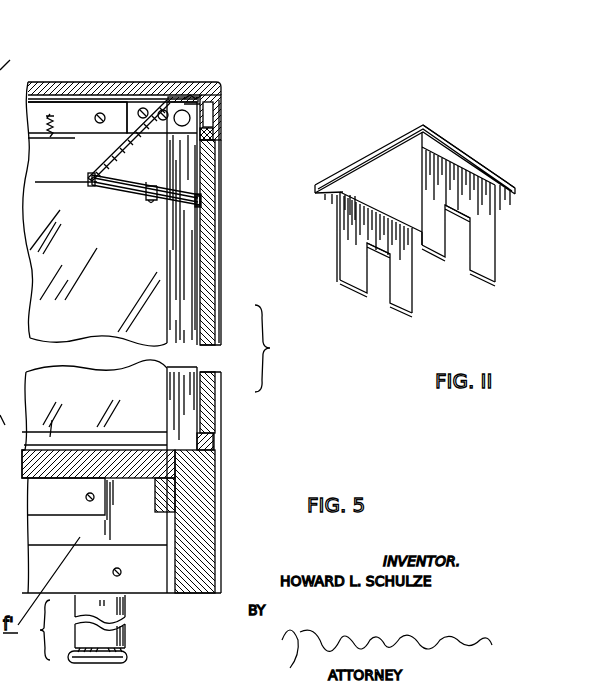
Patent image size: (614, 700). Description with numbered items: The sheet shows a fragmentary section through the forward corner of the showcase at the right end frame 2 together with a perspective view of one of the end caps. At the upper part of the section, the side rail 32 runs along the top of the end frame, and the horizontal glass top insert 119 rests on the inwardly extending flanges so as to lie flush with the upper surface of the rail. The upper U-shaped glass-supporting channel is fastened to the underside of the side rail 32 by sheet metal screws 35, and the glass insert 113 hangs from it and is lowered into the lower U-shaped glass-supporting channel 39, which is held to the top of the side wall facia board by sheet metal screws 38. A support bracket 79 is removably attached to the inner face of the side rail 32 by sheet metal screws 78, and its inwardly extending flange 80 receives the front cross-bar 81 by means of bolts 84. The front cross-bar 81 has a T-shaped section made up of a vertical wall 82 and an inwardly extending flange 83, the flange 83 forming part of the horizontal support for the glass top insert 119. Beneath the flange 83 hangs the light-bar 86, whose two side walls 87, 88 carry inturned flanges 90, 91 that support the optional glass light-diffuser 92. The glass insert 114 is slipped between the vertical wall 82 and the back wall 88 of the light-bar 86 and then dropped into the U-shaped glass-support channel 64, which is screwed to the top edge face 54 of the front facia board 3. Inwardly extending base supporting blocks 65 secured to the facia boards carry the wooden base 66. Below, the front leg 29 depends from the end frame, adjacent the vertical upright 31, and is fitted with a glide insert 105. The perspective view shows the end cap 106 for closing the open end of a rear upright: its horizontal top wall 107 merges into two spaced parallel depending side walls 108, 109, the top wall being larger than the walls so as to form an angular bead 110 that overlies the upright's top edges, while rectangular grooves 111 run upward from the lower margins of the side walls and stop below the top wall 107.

In FIG. 5, the right end frame 2 is at (191, 79).
In FIG. 5, the facia board 3 is at (207, 490).
In FIG. 5, the front leg 29 is at (125, 615).
In FIG. 5, the vertical upright 31 is at (221, 265).
In FIG. 5, the side rail 32 is at (2, 69).
In FIG. 5, the sheet metal screws 35 is at (51, 115).
In FIG. 5, the sheet metal screws 38 is at (3, 425).
In FIG. 5, the lower U-shaped glass-supporting channel 39 is at (53, 437).
In FIG. 5, the top edge face 54 is at (150, 462).
In FIG. 5, the U-shaped glass-support channel 64 is at (217, 447).
In FIG. 5, the base supporting blocks 65 is at (87, 507).
In FIG. 5, the wooden base 66 is at (215, 446).
In FIG. 5, the sheet metal screws 78 is at (140, 96).
In FIG. 5, the support bracket 79 is at (148, 103).
In FIG. 5, the inwardly extending flange 80 is at (198, 97).
In FIG. 5, the front cross-bar 81 is at (214, 118).
In FIG. 5, the vertical wall 82 is at (207, 133).
In FIG. 5, the inwardly extending flange 83 is at (216, 100).
In FIG. 5, the bolts 84 is at (195, 103).
In FIG. 5, the light-bar 86 is at (221, 168).
In FIG. 5, the side wall 87 is at (88, 177).
In FIG. 5, the side wall 88 is at (213, 166).
In FIG. 5, the inturned flange 90 is at (92, 188).
In FIG. 5, the inturned flange 91 is at (202, 203).
In FIG. 5, the glass light-diffuser 92 is at (152, 199).
In FIG. 5, the glide inserts 105 is at (128, 658).
In FIG. 11, the end cap 106 is at (461, 136).
In FIG. 11, the horizontal top wall 107 is at (404, 131).
In FIG. 11, the depending side wall 108 is at (485, 272).
In FIG. 11, the depending side wall 109 is at (343, 283).
In FIG. 11, the angular bead 110 is at (331, 200).
In FIG. 11, the rectangular grooves 111 is at (380, 278).
In FIG. 5, the glass insert 113 is at (160, 300).
In FIG. 5, the glass insert 114 is at (213, 415).
In FIG. 5, the horizontal glass top insert 119 is at (45, 81).